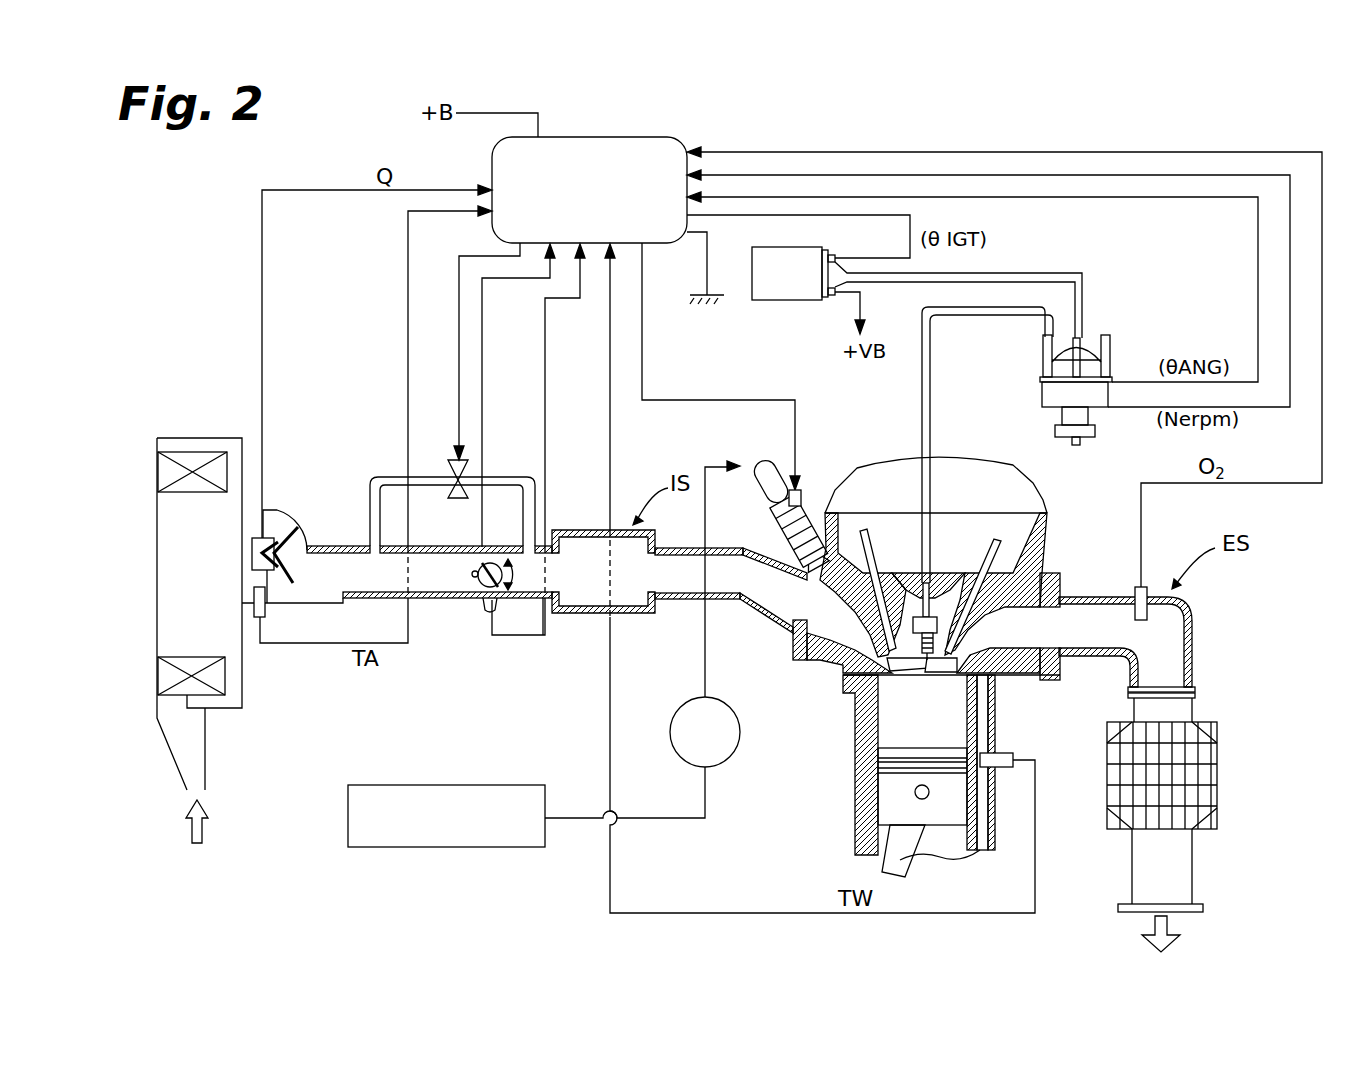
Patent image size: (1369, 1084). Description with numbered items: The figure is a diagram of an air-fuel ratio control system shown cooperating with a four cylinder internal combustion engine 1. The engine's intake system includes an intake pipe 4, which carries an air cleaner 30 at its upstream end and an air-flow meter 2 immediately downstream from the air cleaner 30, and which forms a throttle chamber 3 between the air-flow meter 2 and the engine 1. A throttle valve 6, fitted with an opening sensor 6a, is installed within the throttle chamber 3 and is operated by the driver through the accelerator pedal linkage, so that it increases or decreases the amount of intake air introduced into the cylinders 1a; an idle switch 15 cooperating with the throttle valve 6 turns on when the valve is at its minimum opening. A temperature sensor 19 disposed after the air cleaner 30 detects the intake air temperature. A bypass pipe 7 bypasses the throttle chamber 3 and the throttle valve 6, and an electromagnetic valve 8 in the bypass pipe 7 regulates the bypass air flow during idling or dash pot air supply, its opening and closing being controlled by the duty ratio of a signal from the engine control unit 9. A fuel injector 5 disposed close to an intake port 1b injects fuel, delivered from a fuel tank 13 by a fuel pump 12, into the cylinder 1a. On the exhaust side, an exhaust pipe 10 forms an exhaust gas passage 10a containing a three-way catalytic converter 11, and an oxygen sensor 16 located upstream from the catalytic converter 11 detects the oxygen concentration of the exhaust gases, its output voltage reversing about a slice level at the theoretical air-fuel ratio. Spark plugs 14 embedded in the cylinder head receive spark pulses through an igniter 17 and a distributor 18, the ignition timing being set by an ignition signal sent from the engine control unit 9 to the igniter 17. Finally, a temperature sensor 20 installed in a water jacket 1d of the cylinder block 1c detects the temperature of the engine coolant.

The four cylinder internal combustion engine 1 is at (930, 680).
The cylinder 1a is at (888, 710).
The intake port 1b is at (1037, 551).
The cylinder block 1c is at (855, 830).
The water jacket 1d is at (983, 850).
The air-flow meter 2 is at (268, 543).
The throttle chamber 3 is at (462, 611).
The intake pipe 4 is at (685, 607).
The fuel injector 5 is at (797, 510).
The throttle valve 6 is at (485, 562).
The opening sensor 6a is at (472, 574).
The bypass pipe 7 is at (388, 477).
The electromagnetic valve 8 is at (455, 498).
The engine control unit (ECU) 9 is at (688, 137).
The exhaust pipe 10 is at (1108, 665).
The exhaust gas passage 10a is at (1170, 672).
The three-way catalytic converter 11 is at (1207, 777).
The fuel pump 12 is at (680, 708).
The fuel tank 13 is at (367, 785).
The spark plug 14 is at (932, 587).
The idle switch 15 is at (490, 612).
The oxygen sensor 16 is at (1136, 587).
The igniter 17 is at (790, 300).
The distributor 18 is at (1110, 362).
The temperature sensor 19 is at (267, 613).
The temperature sensor 20 is at (1007, 755).
The air cleaner 30 is at (193, 458).